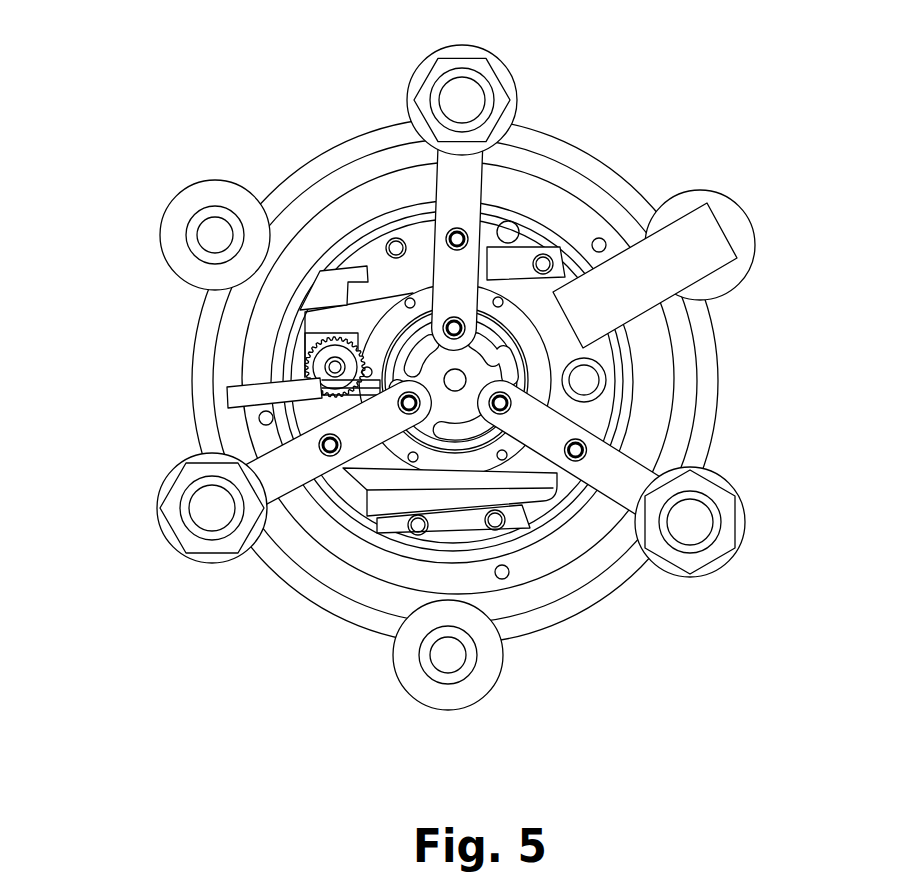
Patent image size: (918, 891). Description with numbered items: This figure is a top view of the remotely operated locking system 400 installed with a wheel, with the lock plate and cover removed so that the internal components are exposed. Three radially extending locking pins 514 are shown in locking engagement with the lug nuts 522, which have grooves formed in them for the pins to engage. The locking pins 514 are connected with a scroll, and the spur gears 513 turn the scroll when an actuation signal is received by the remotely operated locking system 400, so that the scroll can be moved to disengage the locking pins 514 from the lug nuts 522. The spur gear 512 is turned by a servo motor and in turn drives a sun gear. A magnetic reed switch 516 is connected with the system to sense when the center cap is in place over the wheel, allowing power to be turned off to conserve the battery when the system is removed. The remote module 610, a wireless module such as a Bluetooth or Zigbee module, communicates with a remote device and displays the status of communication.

The remotely operated locking system 400 is at (310, 100).
The spur gear 512 is at (387, 340).
The spur gear 513 is at (300, 346).
The magnetic reed switch 516 is at (228, 388).
The locking pin 514 is at (307, 487).
The lug nut 522 is at (487, 57).
The remote module 610 is at (664, 213).